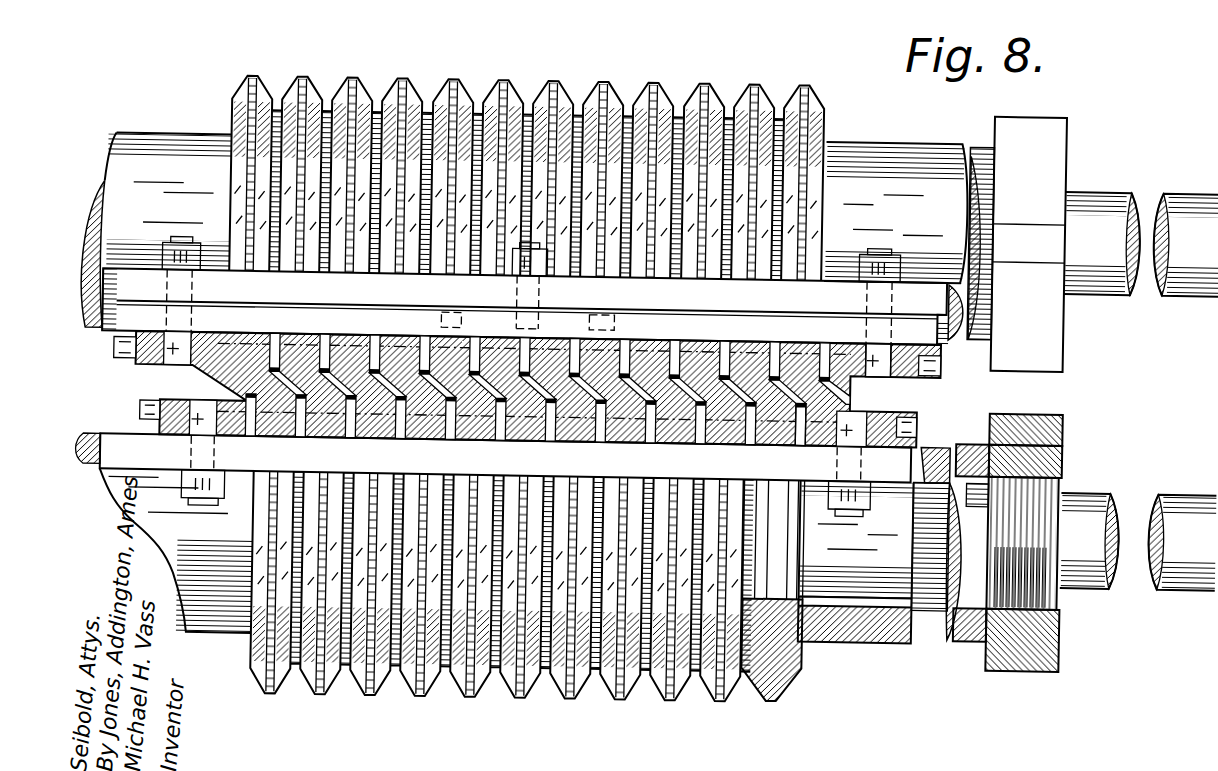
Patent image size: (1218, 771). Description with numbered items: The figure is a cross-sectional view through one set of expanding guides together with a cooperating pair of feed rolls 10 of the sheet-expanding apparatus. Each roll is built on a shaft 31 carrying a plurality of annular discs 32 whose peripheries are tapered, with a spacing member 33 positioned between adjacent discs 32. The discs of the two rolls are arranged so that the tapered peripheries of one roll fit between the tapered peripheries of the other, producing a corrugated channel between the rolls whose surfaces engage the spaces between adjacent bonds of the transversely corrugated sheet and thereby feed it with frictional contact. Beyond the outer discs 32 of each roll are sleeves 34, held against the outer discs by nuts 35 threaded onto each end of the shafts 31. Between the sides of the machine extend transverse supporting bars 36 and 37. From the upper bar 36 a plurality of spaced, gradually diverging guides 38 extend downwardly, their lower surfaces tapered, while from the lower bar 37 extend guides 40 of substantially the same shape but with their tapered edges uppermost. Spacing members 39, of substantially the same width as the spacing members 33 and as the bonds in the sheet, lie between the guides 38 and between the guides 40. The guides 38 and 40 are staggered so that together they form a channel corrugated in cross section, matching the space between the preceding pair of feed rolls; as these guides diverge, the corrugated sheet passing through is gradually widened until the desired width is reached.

The feed rolls 10 is at (526, 379).
The shafts 31 is at (1097, 191).
The annular discs 32 is at (826, 102).
The spacing member 33 is at (780, 86).
The sleeves 34 is at (910, 150).
The nuts 35 is at (1035, 417).
The transverse supporting bar 36 is at (930, 294).
The transverse supporting bar 37 is at (1095, 436).
The guides 38 is at (862, 375).
The spacing members 39 is at (697, 448).
The guides 40 is at (818, 406).